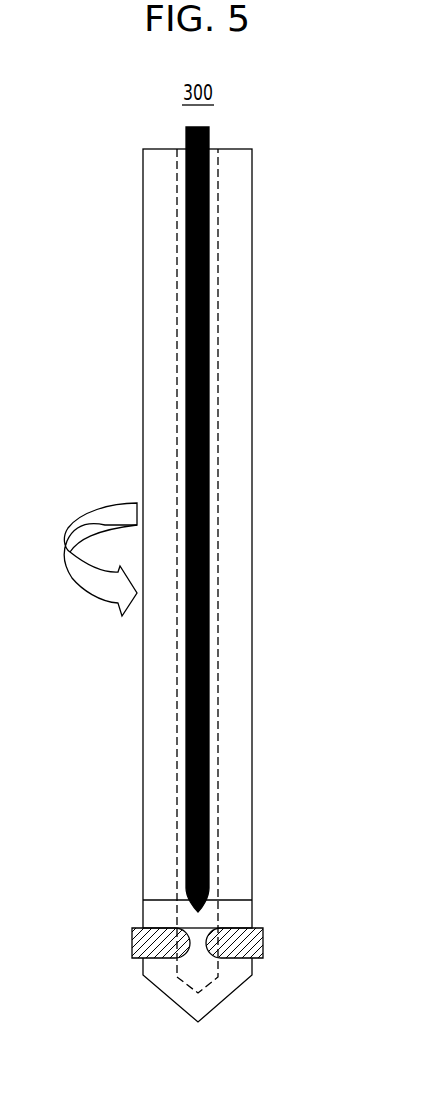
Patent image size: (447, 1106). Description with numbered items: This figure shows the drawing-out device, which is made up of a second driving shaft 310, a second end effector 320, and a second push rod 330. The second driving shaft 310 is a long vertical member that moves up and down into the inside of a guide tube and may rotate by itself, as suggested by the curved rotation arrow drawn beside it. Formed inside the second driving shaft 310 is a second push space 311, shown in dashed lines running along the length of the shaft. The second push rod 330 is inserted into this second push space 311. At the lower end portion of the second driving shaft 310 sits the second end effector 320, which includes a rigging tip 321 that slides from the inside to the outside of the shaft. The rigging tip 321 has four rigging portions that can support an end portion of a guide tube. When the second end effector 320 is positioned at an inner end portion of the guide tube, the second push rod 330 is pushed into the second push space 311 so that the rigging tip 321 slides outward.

The second driving shaft 310 is at (228, 459).
The second push space 311 is at (218, 558).
The second end effector 320 is at (247, 968).
The rigging tip 321 is at (250, 945).
The second push rod 330 is at (209, 322).